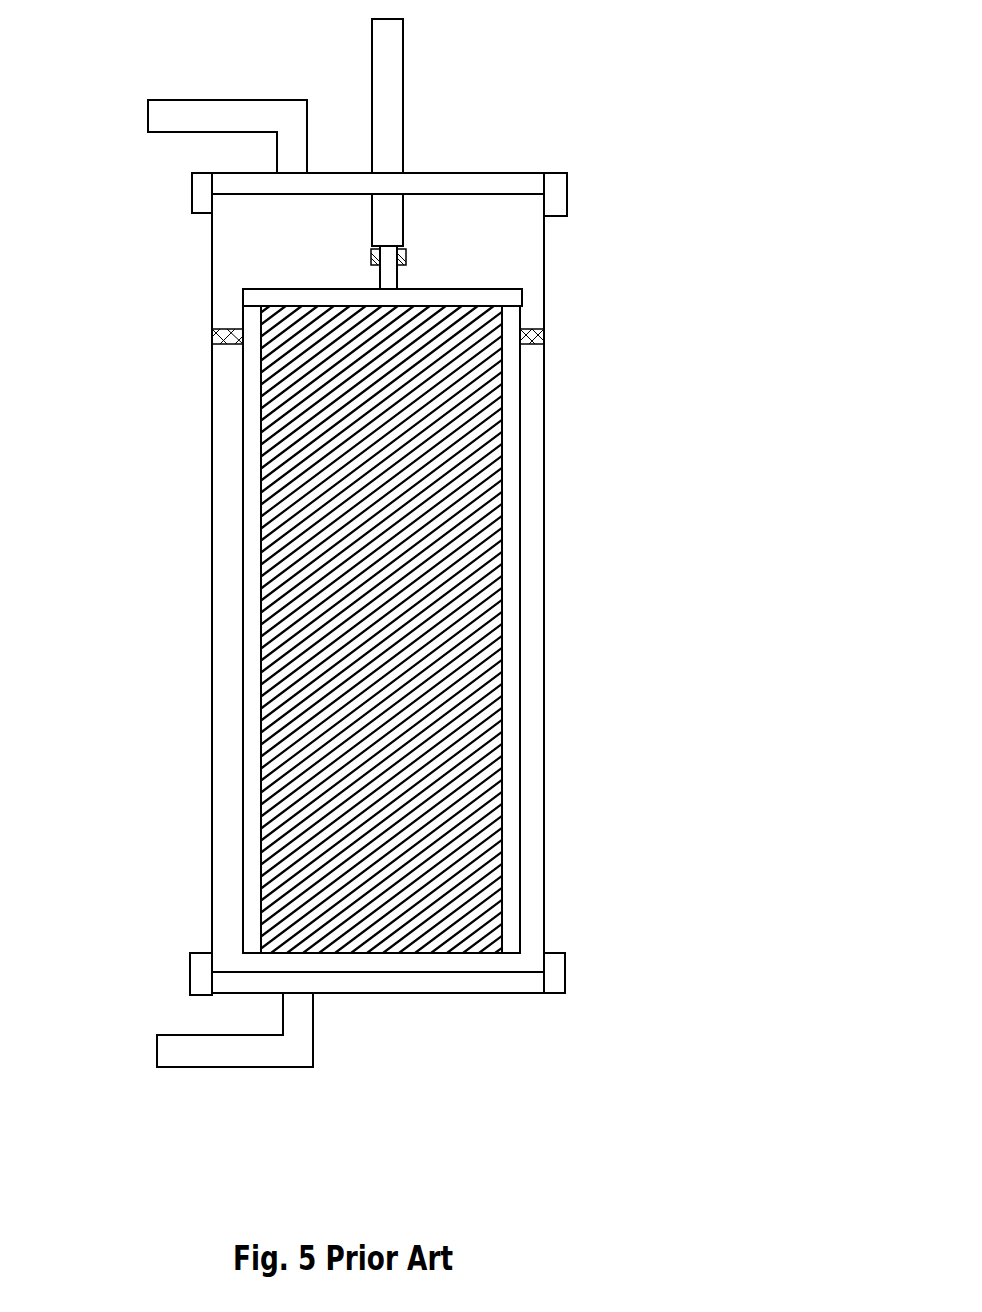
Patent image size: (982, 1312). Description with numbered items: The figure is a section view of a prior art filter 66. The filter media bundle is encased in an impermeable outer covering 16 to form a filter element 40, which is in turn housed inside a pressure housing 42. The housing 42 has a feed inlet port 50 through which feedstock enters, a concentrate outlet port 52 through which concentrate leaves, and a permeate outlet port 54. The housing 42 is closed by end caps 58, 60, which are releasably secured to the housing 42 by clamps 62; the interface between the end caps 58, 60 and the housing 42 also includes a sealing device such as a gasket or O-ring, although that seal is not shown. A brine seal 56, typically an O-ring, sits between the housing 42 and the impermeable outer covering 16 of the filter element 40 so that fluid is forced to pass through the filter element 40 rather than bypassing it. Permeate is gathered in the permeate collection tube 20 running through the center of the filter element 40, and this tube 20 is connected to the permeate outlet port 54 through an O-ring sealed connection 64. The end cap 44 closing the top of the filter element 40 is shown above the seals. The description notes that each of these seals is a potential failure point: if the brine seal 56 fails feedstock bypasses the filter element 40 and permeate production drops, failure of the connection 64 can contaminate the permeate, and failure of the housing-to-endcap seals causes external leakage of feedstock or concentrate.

The impermeable outer covering 16 is at (522, 440).
The permeate collection tube 20 is at (400, 276).
The filter element 40 is at (442, 767).
The housing 42 is at (545, 523).
The end cap 44 is at (283, 295).
The feed inlet port 50 is at (210, 1067).
The concentrate outlet port 52 is at (233, 99).
The permeate outlet port 54 is at (405, 70).
The brine seal 56 is at (212, 333).
The end cap 58 is at (437, 997).
The end cap 60 is at (470, 173).
The clamp 62 is at (567, 197).
The O-ring sealed connection 64 is at (372, 253).
The prior art filter 66 is at (690, 253).